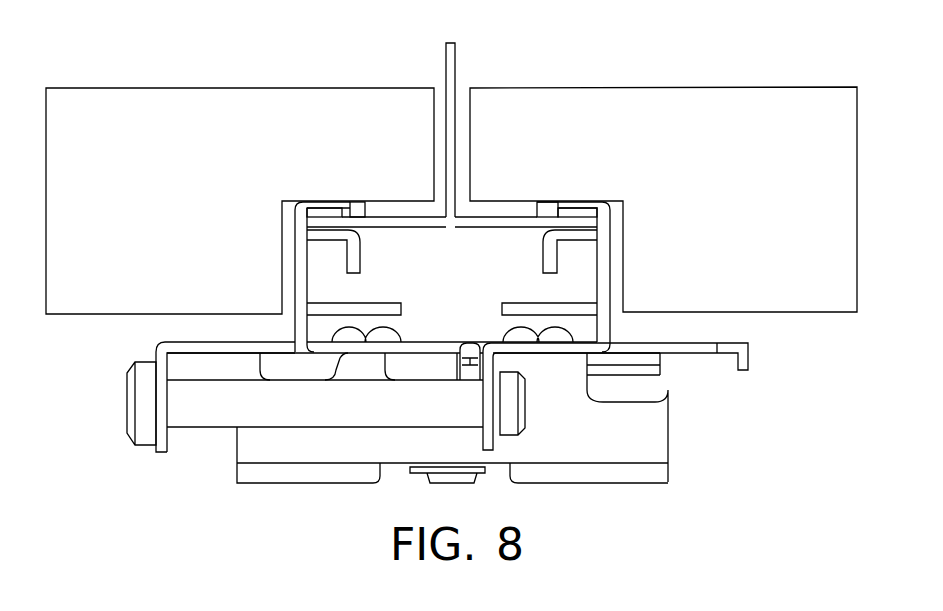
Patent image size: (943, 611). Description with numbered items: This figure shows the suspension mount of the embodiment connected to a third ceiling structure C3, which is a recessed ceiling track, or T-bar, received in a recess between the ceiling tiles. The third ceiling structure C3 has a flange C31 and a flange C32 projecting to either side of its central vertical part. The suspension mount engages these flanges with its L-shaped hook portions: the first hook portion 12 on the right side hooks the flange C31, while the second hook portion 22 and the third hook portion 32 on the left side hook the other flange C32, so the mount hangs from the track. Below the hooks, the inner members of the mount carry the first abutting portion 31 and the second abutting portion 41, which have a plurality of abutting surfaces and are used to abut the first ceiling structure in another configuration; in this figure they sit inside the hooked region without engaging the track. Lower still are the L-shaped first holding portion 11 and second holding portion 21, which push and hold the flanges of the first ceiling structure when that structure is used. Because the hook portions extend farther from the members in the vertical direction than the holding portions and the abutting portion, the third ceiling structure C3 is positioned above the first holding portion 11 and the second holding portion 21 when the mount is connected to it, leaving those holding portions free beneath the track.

The first holding portion 11 is at (550, 307).
The first hook portion 12 is at (580, 207).
The second holding portion 21 is at (352, 308).
The second hook portion 22 is at (357, 202).
The first abutting portion 31 is at (353, 258).
The third hook portion 32 is at (320, 207).
The second abutting portion 41 is at (550, 255).
The third ceiling structure C3 is at (456, 112).
The flange C31 is at (513, 227).
The flange C32 is at (395, 227).